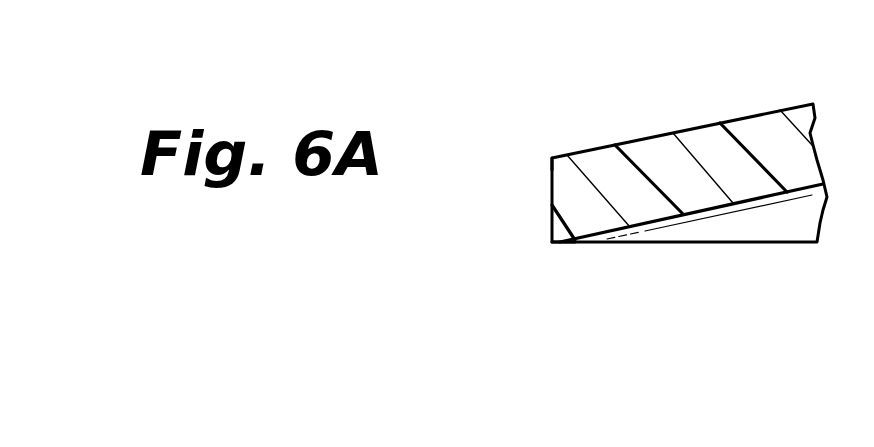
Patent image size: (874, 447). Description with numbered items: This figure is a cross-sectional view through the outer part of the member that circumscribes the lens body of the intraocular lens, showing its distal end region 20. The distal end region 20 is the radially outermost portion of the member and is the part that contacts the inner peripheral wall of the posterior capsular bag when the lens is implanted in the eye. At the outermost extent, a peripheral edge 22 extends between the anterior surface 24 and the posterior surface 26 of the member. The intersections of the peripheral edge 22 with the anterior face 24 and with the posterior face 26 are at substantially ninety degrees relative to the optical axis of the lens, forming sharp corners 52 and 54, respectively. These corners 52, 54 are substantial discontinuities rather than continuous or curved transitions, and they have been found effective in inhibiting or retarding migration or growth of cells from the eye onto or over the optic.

The distal end region 20 is at (602, 138).
The peripheral edge 22 is at (552, 202).
The anterior surface 24 is at (650, 136).
The posterior surface 26 is at (722, 208).
The sharp corner 52 is at (552, 158).
The sharp corner 54 is at (548, 245).